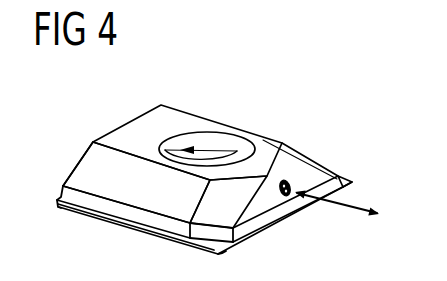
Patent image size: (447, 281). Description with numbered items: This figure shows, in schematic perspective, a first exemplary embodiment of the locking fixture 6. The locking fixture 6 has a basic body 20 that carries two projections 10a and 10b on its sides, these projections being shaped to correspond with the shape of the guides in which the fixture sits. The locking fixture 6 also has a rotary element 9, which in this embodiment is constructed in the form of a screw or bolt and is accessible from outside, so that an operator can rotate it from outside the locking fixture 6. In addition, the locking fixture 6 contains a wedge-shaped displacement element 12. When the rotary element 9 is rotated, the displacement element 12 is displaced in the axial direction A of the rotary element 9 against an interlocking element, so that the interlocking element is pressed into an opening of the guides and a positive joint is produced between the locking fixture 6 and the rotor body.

The locking fixture 6 is at (272, 118).
The rotary element 9 is at (190, 148).
The projection 10a is at (213, 249).
The projection 10b is at (339, 176).
The displacement element 12 is at (228, 152).
The basic body 20 is at (93, 168).
The axial direction A is at (357, 195).